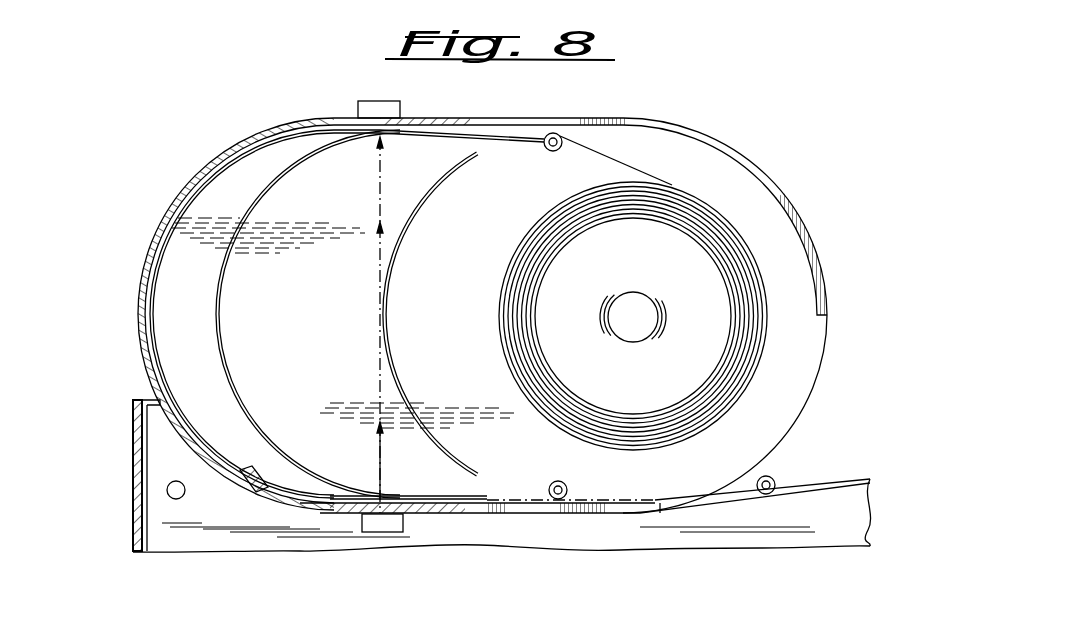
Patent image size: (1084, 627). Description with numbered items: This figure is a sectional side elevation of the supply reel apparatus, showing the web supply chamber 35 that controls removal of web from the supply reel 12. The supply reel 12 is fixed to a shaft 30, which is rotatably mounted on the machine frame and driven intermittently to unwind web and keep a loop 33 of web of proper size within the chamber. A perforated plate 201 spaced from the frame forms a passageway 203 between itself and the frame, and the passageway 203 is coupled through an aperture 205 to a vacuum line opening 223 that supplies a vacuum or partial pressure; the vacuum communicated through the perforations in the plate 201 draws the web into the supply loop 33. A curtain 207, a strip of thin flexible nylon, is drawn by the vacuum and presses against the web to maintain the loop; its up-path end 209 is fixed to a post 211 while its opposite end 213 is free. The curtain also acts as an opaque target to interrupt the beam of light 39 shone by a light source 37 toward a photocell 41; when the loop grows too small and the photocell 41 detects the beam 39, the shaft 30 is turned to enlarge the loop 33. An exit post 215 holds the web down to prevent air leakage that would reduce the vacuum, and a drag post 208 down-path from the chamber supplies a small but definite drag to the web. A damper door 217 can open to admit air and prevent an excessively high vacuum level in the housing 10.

The housing 10 is at (616, 126).
The supply reel 12 is at (505, 321).
The shaft 30 is at (646, 329).
The loop 33 is at (216, 312).
The web supply chamber 35 is at (372, 428).
The light source 37 is at (380, 533).
The beam of light 39 is at (379, 186).
The photocell 41 is at (402, 109).
The perforated plate 201 is at (198, 186).
The passageway 203 is at (147, 345).
The aperture 205 is at (252, 472).
The curtain 207 is at (228, 268).
The drag post 208 is at (772, 481).
The up-path end 209 is at (534, 143).
The post 211 is at (555, 153).
The opposite end 213 is at (458, 495).
The exit post 215 is at (562, 487).
The damper door 217 is at (133, 514).
The vacuum line opening 223 is at (178, 474).